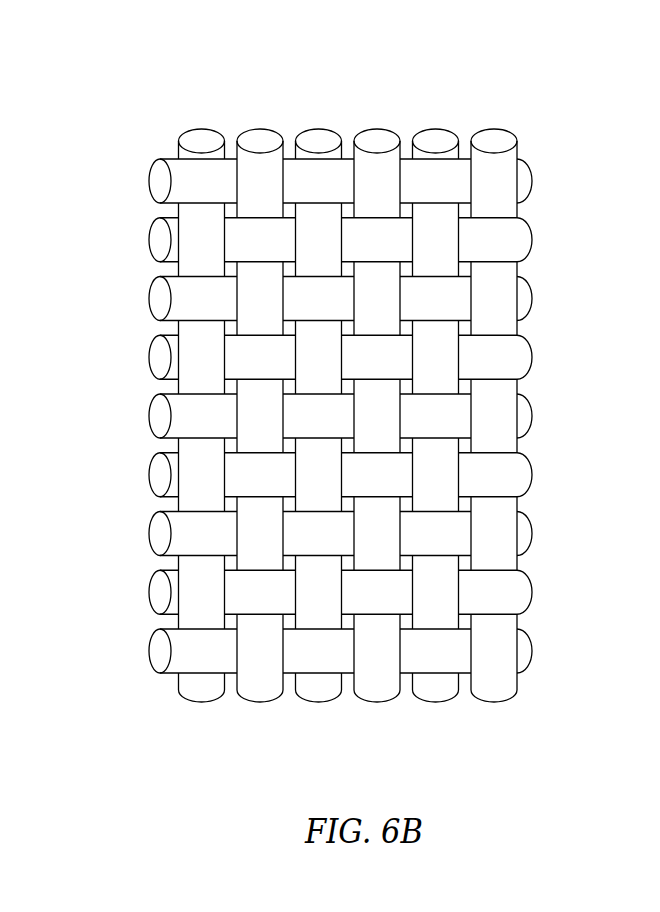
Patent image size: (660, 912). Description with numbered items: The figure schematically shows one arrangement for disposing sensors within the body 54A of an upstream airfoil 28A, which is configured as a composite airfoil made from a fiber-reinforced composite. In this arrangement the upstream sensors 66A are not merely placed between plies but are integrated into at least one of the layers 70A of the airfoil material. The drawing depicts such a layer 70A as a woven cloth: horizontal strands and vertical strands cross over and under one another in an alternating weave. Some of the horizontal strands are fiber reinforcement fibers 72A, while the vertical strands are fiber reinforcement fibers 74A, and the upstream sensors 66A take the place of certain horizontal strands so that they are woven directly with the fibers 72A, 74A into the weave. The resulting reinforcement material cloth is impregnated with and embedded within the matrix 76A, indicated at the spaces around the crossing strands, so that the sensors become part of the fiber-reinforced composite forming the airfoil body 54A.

The upstream airfoil 28A is at (162, 91).
The body 54A is at (525, 125).
The layer 70A is at (352, 415).
The fiber reinforcement fibers 72A is at (532, 181).
The upstream sensor 66A is at (532, 240).
The fiber reinforcement fibers 74A is at (202, 702).
The matrix 76A is at (228, 268).